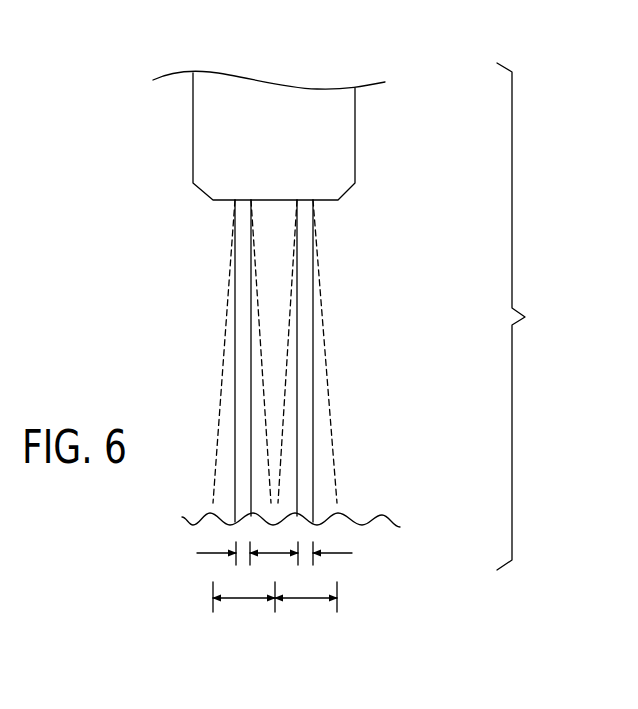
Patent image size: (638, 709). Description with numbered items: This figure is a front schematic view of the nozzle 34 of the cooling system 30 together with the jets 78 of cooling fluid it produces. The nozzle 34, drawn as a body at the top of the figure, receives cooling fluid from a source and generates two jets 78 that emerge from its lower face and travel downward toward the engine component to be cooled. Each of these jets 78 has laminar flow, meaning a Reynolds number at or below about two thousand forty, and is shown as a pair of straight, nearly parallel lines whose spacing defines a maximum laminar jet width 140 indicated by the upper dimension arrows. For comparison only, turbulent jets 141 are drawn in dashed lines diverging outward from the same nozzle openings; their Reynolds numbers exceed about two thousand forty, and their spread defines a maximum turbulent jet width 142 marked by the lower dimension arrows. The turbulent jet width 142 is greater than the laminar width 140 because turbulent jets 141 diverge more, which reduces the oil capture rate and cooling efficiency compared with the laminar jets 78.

The cooling system 30 is at (527, 316).
The nozzle 34 is at (320, 145).
The jets of cooling fluid 78 is at (236, 407).
The maximum laminar jet width 140 is at (212, 553).
The turbulent jets 141 is at (223, 353).
The maximum turbulent jet width 142 is at (312, 598).